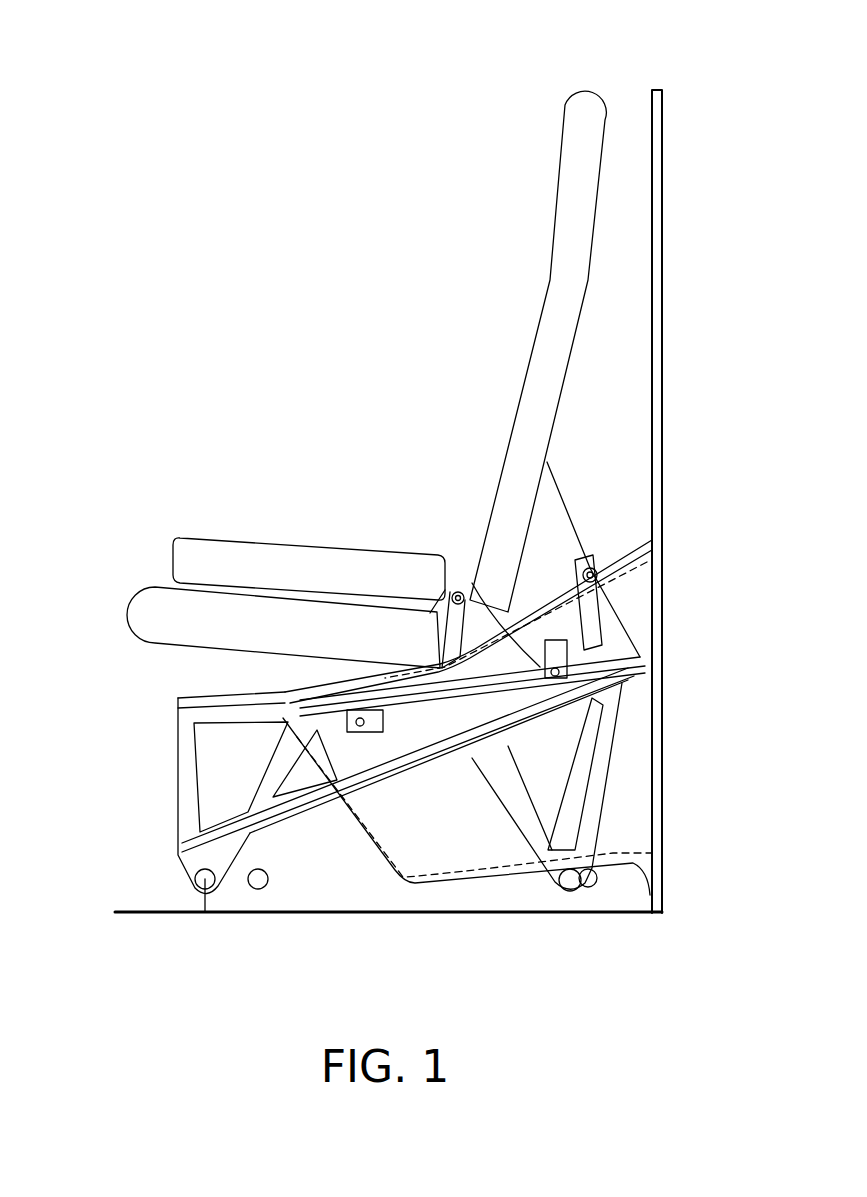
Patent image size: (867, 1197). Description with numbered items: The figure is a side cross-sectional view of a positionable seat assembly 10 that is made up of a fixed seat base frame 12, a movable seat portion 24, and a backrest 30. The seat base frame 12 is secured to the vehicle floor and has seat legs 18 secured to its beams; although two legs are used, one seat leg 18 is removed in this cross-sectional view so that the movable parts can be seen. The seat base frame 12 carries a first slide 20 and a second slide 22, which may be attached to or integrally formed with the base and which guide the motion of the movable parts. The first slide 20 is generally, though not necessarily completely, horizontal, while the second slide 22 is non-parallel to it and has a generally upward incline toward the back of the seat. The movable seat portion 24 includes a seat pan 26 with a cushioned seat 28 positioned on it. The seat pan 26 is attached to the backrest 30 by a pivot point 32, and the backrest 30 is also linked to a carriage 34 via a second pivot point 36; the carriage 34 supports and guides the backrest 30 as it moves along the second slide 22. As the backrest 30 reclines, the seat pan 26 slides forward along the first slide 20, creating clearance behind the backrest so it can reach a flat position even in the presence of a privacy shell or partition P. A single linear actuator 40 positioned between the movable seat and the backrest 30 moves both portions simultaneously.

The positionable seat assembly 10 is at (172, 339).
The fixed seat base frame 12 is at (203, 797).
The seat leg 18 is at (413, 735).
The first slide 20 is at (180, 705).
The second slide 22 is at (690, 855).
The movable seat portion 24 is at (246, 571).
The seat pan 26 is at (243, 640).
The cushioned seat 28 is at (237, 540).
The backrest 30 is at (605, 110).
The pivot point 32 is at (466, 590).
The carriage 34 is at (627, 610).
The second pivot point 36 is at (612, 562).
The single linear actuator 40 is at (468, 760).
The privacy shell or partition P is at (680, 190).